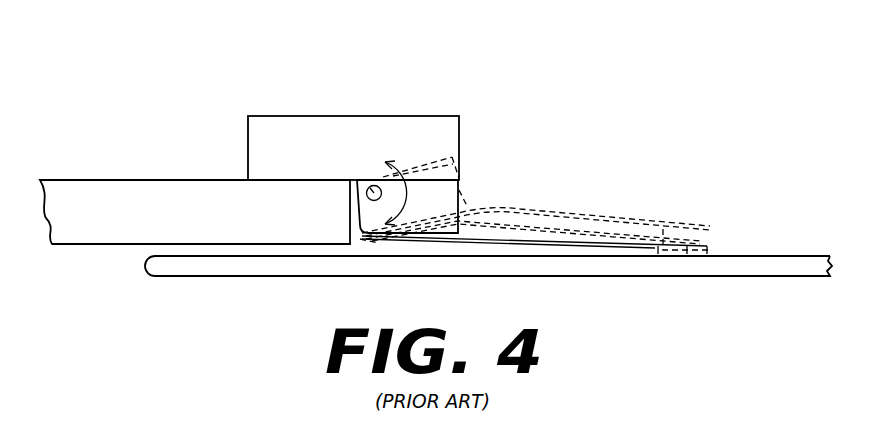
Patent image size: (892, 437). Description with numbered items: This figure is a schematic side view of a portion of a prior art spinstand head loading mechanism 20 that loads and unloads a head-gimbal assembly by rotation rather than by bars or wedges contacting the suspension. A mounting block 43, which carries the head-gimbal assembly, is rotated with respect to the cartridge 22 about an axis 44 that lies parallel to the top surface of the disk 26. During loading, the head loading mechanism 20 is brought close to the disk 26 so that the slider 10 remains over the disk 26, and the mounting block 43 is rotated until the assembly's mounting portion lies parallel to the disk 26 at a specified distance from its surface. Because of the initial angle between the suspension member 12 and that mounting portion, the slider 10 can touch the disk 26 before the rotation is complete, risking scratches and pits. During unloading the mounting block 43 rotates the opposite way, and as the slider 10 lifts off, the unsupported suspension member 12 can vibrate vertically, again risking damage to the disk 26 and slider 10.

The slider 10 is at (678, 228).
The suspension member 12 is at (515, 238).
The head loading mechanism 20 is at (190, 200).
The cartridge 22 is at (277, 128).
The disk 26 is at (752, 253).
The mounting block 43 is at (470, 202).
The axis 44 is at (372, 186).